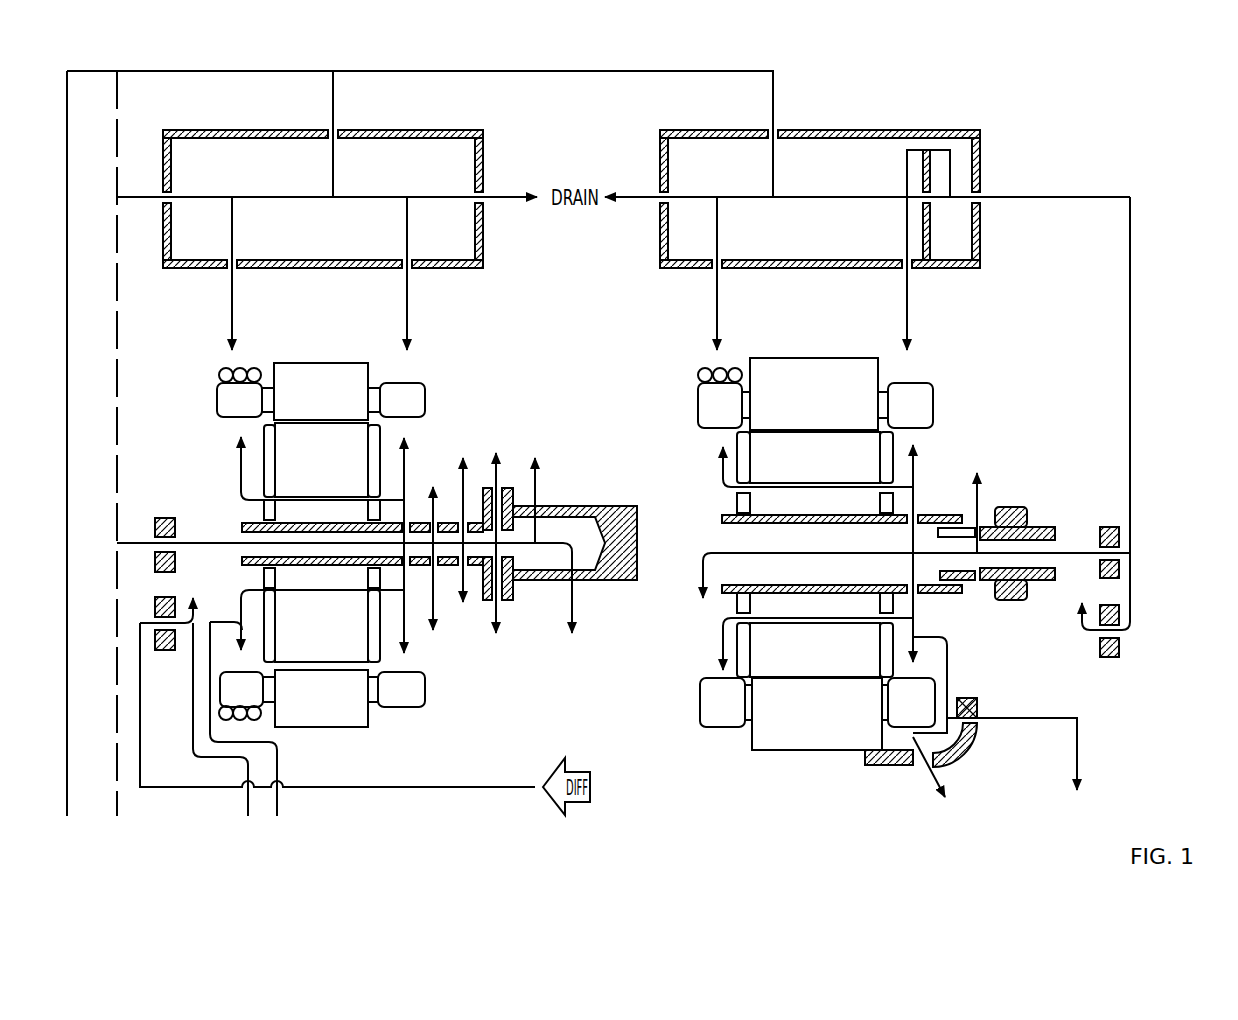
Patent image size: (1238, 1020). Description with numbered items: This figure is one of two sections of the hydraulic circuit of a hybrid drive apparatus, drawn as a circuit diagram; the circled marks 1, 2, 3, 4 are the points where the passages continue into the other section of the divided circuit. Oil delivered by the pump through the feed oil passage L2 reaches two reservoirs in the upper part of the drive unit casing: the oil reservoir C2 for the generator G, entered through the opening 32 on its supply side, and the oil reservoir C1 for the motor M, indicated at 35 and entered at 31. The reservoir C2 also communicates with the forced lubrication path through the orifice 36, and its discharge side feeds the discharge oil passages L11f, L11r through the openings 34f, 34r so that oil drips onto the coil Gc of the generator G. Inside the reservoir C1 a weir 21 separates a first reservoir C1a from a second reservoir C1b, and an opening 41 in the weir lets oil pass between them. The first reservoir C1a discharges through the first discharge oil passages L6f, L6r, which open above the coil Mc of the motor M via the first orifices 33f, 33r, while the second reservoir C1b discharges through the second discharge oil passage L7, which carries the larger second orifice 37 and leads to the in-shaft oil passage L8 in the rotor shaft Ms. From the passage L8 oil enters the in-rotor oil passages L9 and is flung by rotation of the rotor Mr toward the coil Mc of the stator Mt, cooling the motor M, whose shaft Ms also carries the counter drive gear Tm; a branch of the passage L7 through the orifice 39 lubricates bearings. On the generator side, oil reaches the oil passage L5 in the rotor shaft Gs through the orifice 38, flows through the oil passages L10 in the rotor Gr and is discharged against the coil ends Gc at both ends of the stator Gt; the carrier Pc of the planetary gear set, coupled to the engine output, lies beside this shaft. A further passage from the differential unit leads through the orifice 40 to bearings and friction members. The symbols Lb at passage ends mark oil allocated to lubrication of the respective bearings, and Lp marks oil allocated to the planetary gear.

The first oil supply line 1 is at (413, 456).
The second oil supply line 2 is at (117, 456).
The third oil supply line 3 is at (227, 732).
The fourth oil supply line 4 is at (250, 732).
The weir 21 is at (927, 150).
The oil passage to first clutch 31 is at (778, 128).
The opening 32 is at (340, 135).
The first orifice 33f is at (719, 268).
The first orifice 33r is at (905, 268).
The opening 34f is at (234, 268).
The opening 34r is at (405, 268).
The first clutch housing 35 is at (980, 195).
The orifice 36 is at (165, 193).
The second orifice 37 is at (1110, 527).
The orifice 38 is at (165, 517).
The orifice 39 is at (1110, 657).
The orifice 40 is at (165, 650).
The opening 41 is at (910, 198).
The oil reservoir C1 is at (820, 199).
The first reservoir C1a is at (805, 245).
The second reservoir C1b is at (960, 238).
The oil reservoir C2 is at (323, 199).
The generator G is at (330, 539).
The stator Gt is at (321, 391).
The rotor Gr is at (322, 460).
The coil Gc is at (222, 400).
The rotor shaft Gs is at (242, 522).
The motor M is at (862, 574).
The stator Mt is at (814, 394).
The rotor Mr is at (815, 457).
The coil Mc is at (705, 405).
The rotor shaft Ms is at (722, 515).
The carrier Pc is at (540, 505).
The counter drive gear Tm is at (1016, 507).
The feed oil passage L2 is at (553, 80).
The oil passage L5 is at (247, 544).
The first discharge oil passage L6f is at (715, 318).
The first discharge oil passage L6r is at (910, 318).
The second discharge oil passage L7 is at (1128, 372).
The in-shaft oil passage L8 is at (837, 553).
The in-rotor oil passage L9 is at (816, 622).
The oil passage L10 is at (331, 592).
The discharge oil passage L11f is at (230, 308).
The discharge oil passage L11r is at (410, 308).
The bearing lubrication allocation symbol Lb is at (637, 627).
The planetary gear lubrication allocation symbol Lp is at (496, 563).